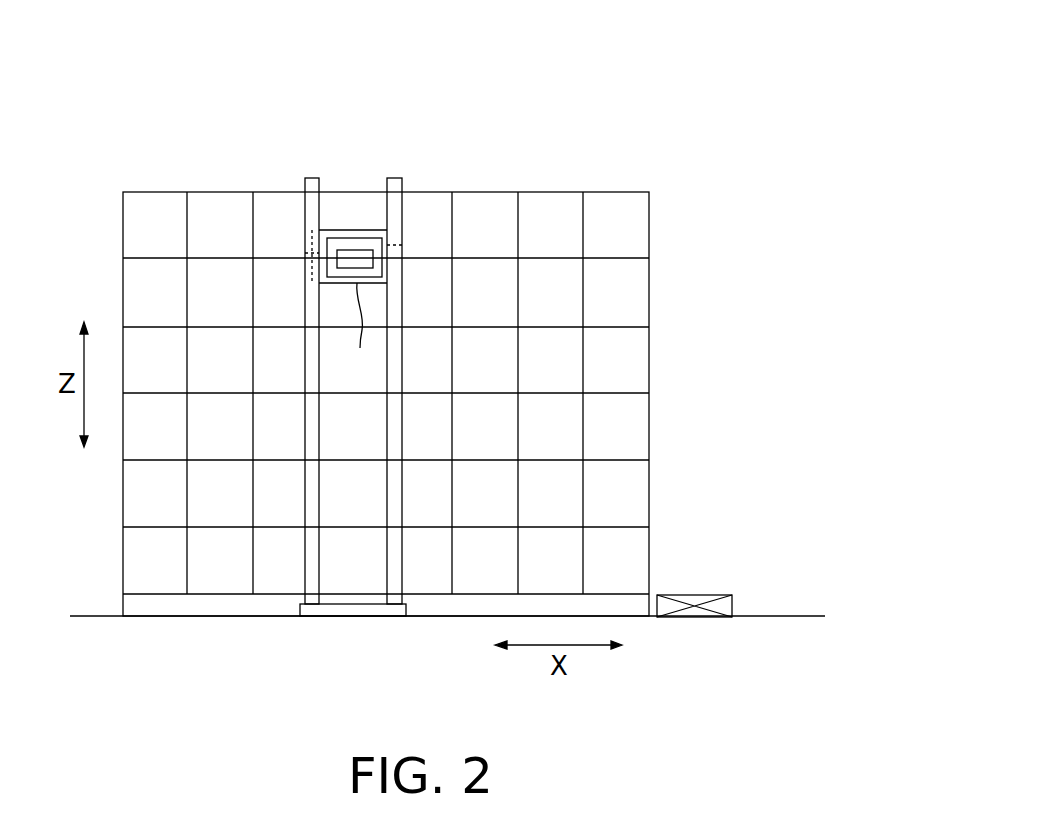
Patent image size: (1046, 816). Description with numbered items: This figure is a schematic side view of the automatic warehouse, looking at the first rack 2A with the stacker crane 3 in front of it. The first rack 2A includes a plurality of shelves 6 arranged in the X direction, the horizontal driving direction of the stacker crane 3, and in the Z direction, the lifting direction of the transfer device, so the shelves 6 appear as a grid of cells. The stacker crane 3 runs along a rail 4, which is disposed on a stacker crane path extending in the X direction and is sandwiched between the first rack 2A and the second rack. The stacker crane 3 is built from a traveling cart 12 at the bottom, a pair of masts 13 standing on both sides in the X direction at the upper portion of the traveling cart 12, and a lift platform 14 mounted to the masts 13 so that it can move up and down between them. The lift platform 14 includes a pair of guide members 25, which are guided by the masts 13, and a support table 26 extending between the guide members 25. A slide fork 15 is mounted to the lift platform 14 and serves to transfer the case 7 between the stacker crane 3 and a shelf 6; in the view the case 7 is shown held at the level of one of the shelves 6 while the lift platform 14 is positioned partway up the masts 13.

The first rack 2A is at (615, 172).
The stacker crane 3 is at (335, 382).
The rail 4 is at (771, 615).
The shelves 6 is at (623, 243).
The case 7 is at (350, 270).
The traveling cart 12 is at (354, 617).
The masts 13 is at (305, 317).
The lift platform 14 is at (402, 234).
The slide fork 15 is at (345, 250).
The guide members 25 is at (305, 253).
The support table 26 is at (359, 335).